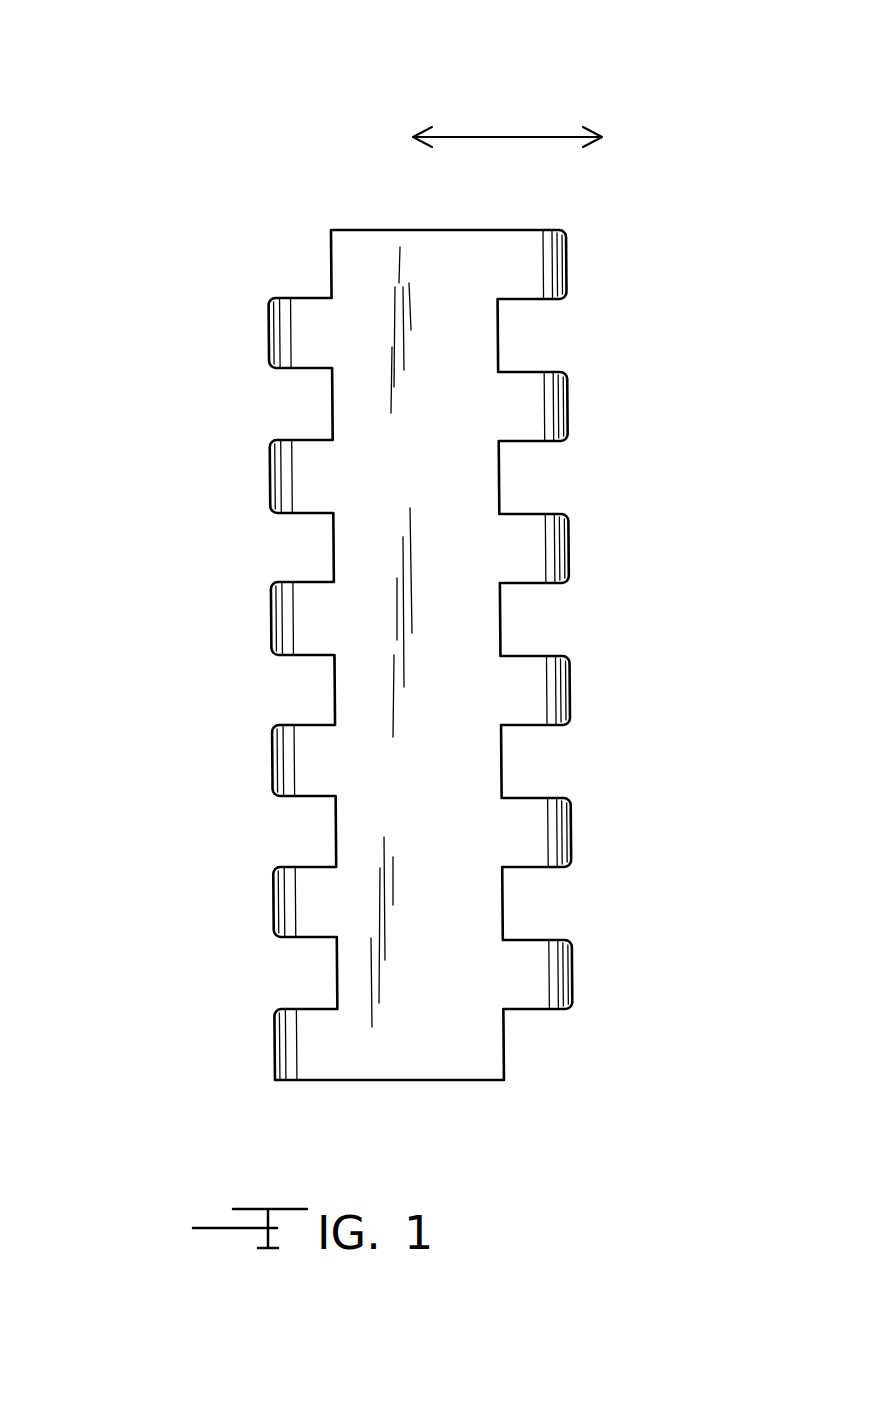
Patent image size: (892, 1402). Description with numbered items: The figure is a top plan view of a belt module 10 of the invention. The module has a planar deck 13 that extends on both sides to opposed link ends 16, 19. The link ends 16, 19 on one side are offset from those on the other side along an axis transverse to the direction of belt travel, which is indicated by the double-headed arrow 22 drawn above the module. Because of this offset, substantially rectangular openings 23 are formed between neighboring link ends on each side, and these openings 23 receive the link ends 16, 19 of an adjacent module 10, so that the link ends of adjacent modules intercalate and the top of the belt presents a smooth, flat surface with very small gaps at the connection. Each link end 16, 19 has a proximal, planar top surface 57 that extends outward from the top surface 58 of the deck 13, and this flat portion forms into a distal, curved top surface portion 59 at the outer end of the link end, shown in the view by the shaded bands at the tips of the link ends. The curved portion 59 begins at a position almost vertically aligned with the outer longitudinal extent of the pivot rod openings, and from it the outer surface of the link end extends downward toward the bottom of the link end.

The belt module 10 is at (405, 595).
The planar deck 13 is at (430, 451).
The link end 16 is at (296, 481).
The link end 19 is at (553, 406).
The arrow 22 is at (520, 137).
The substantially rectangular opening 23 is at (300, 682).
The proximal planar top surface 57 is at (312, 912).
The top surface 58 is at (430, 1045).
The distal curved top surface portion 59 is at (275, 905).